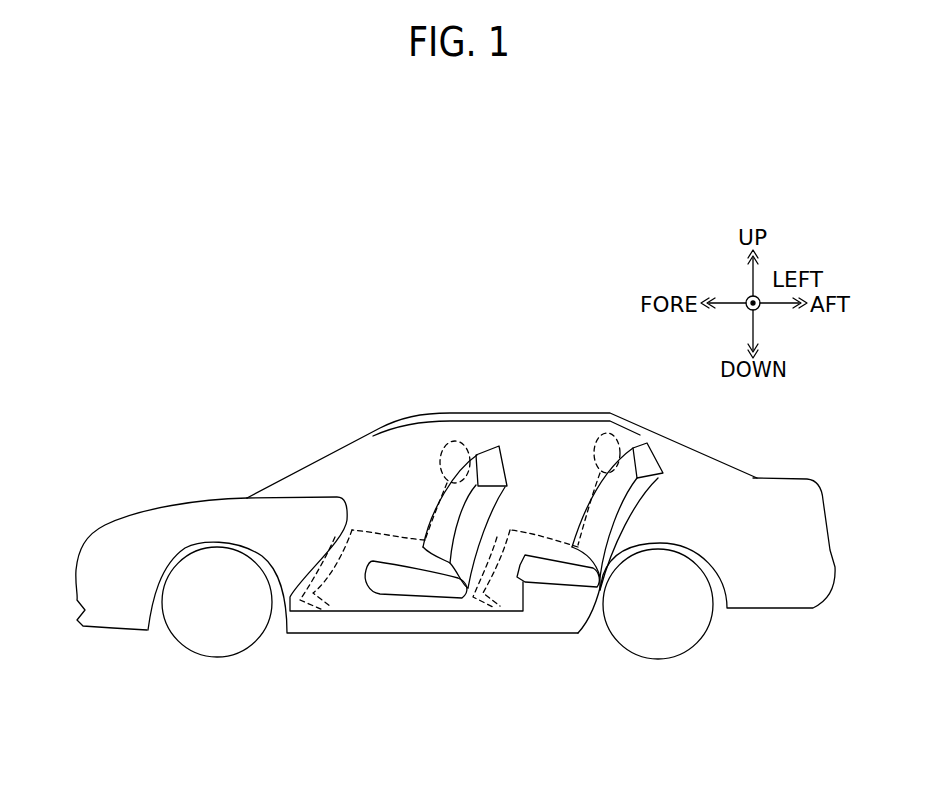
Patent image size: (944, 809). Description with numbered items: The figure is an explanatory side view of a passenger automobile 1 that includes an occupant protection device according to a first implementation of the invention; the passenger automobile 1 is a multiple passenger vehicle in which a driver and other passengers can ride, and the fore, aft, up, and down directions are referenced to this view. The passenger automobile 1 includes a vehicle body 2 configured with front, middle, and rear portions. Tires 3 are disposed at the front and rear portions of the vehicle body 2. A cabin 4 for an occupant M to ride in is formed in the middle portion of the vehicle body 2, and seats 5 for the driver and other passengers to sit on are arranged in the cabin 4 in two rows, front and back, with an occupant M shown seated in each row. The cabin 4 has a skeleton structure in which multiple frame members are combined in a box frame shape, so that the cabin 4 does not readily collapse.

The passenger automobile 1 is at (466, 318).
The vehicle body 2 is at (395, 422).
The tires 3 is at (212, 642).
The cabin 4 is at (338, 473).
The seats 5 is at (405, 597).
The occupant M is at (458, 428).